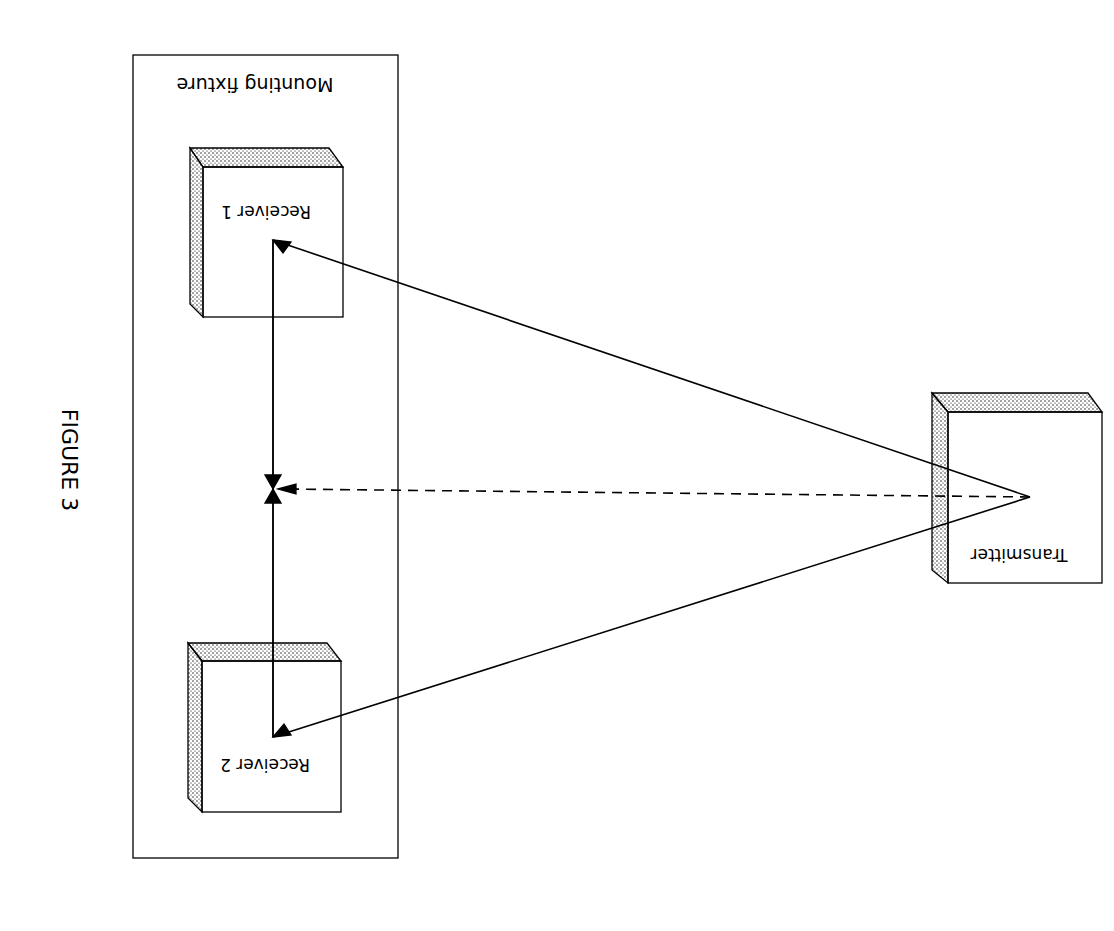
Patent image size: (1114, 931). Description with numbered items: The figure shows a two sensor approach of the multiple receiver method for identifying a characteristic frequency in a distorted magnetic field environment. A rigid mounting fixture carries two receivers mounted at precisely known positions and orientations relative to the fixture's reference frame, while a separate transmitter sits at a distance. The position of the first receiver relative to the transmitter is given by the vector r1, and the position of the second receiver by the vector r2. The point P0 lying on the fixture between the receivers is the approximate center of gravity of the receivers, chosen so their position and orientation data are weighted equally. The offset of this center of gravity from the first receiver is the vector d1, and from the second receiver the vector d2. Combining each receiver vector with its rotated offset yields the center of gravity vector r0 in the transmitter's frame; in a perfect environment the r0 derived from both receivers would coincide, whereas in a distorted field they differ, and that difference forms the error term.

The position vector of first receiver r1 is at (690, 353).
The position vector of second receiver r2 is at (689, 694).
The center of gravity position vector r0 is at (549, 464).
The center of gravity point P0 is at (256, 478).
The offset vector from first receiver to center of gravity d1 is at (214, 445).
The offset vector from second receiver to center of gravity d2 is at (215, 601).